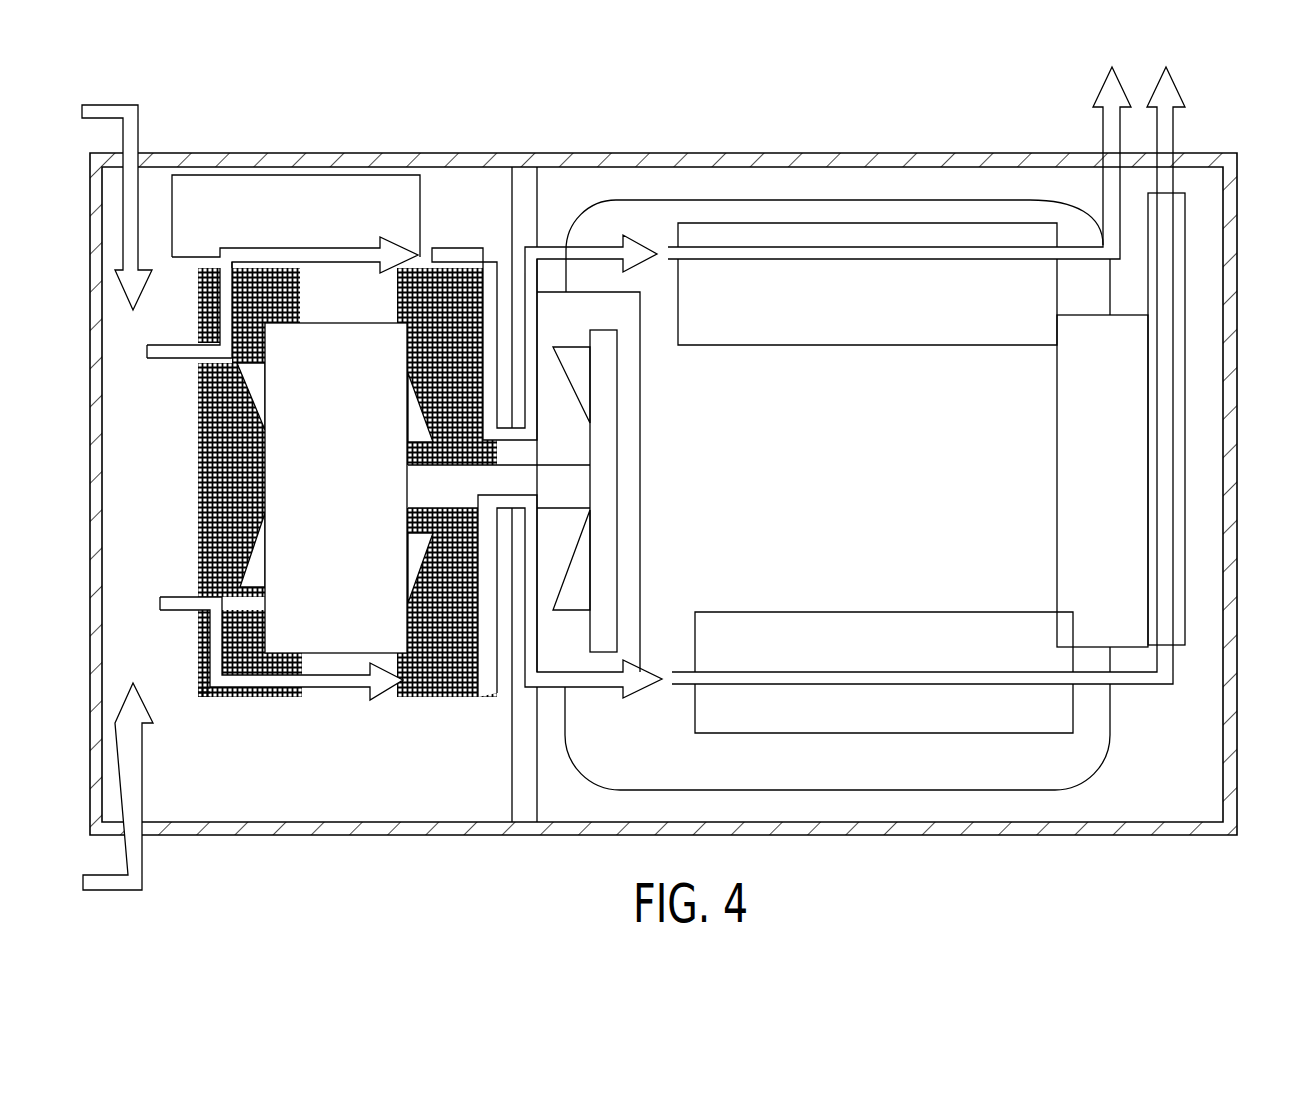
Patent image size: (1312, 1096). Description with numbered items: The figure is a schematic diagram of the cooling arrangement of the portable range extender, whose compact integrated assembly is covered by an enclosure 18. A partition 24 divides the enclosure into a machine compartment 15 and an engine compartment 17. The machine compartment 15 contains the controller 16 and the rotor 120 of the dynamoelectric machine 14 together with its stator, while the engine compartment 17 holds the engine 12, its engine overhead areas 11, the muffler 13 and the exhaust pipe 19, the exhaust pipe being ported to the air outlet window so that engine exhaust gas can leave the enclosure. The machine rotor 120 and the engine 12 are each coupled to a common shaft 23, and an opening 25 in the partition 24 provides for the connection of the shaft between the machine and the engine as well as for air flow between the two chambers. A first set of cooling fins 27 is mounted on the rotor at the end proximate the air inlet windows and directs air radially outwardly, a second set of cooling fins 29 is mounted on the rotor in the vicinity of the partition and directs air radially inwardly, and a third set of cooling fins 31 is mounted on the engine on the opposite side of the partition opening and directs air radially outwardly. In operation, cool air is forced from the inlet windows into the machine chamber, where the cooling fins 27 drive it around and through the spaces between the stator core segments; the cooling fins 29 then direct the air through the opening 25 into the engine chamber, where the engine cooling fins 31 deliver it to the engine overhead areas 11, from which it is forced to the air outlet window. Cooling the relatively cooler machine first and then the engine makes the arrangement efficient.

The engine overhead areas 11 is at (880, 347).
The engine 12 is at (1120, 711).
The muffler 13 is at (1150, 470).
The dynamoelectric machine 14 is at (304, 502).
The machine compartment 15 is at (272, 808).
The controller 16 is at (305, 172).
The engine compartment 17 is at (1141, 803).
The enclosure 18 is at (1238, 752).
The exhaust pipe 19 is at (1178, 253).
The shaft 23 is at (566, 513).
The partition 24 is at (523, 170).
The opening 25 is at (520, 292).
The first set of cooling fins 27 is at (240, 403).
The second set of cooling fins 29 is at (435, 648).
The third set of cooling fins 31 is at (573, 395).
The rotor 120 is at (340, 655).